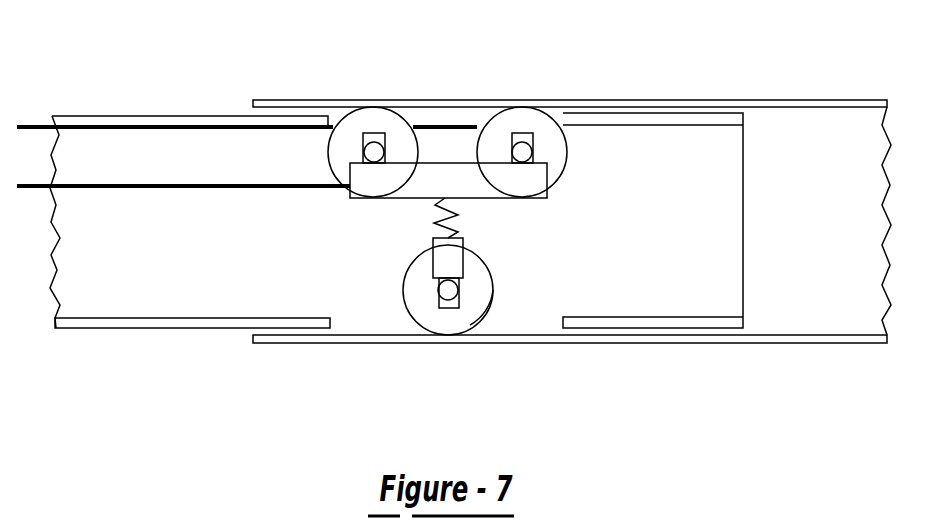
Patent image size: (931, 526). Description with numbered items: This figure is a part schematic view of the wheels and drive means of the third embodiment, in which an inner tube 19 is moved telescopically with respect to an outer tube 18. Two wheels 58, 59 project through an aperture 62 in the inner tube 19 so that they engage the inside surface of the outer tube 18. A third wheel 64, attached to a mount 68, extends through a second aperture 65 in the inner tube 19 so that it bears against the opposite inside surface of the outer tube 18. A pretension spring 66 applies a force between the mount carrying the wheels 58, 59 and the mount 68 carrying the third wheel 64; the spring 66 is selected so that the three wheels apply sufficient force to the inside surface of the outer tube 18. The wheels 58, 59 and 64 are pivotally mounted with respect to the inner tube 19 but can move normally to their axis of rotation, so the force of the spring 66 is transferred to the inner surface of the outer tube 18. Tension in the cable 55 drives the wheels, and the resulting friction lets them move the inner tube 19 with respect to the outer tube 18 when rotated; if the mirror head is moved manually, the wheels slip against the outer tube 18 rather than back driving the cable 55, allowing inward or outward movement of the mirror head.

The outer tube 18 is at (775, 104).
The inner tube 19 is at (648, 125).
The cable 55 is at (214, 186).
The wheel 58 is at (375, 122).
The wheel 59 is at (527, 122).
The aperture 62 is at (449, 127).
The third wheel 64 is at (427, 315).
The second aperture 65 is at (498, 312).
The pretension spring 66 is at (462, 217).
The mount 68 is at (443, 258).